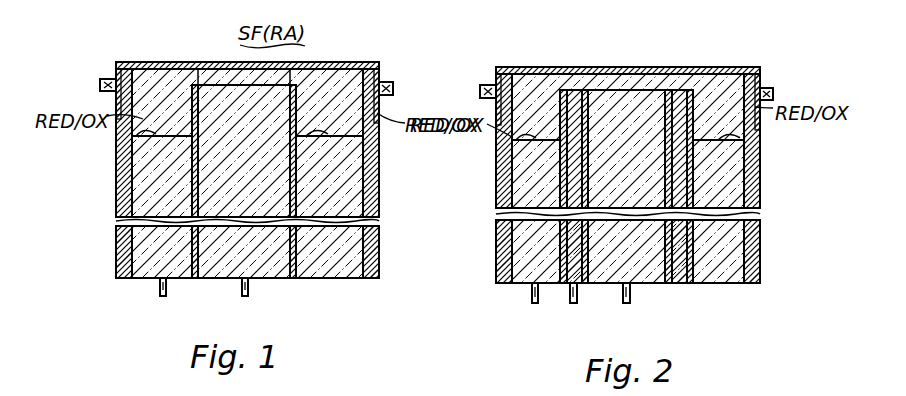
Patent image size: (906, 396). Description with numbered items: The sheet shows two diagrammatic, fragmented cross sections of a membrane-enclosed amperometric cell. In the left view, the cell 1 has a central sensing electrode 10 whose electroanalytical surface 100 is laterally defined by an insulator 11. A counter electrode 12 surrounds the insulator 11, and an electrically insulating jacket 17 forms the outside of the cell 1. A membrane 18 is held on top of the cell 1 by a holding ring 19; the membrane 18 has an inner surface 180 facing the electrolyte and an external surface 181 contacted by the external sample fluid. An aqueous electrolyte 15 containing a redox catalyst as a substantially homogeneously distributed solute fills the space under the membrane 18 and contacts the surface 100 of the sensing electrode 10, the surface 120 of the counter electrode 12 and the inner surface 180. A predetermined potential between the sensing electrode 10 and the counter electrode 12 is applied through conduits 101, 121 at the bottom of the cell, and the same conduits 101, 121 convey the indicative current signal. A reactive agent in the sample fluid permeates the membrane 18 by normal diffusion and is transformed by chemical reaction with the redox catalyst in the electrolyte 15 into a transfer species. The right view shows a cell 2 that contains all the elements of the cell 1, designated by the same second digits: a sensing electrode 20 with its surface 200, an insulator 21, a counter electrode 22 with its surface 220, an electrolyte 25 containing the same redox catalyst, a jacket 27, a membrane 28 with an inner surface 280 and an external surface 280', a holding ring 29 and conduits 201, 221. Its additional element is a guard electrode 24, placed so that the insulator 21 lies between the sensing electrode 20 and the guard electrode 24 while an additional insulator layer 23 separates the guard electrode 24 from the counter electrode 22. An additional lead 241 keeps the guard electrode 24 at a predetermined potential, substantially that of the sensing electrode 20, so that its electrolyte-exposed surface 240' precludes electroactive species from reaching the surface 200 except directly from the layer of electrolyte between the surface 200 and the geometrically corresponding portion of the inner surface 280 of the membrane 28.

In FIG. 1, the cell 1 is at (97, 173).
In FIG. 1, the sensing electrode 10 is at (248, 156).
In FIG. 1, the insulator 11 is at (335, 63).
In FIG. 1, the counter electrode 12 is at (168, 194).
In FIG. 1, the aqueous electrolyte 15 is at (165, 97).
In FIG. 1, the electrically insulating jacket 17 is at (118, 193).
In FIG. 1, the membrane 18 is at (340, 90).
In FIG. 1, the holding ring 19 is at (103, 80).
In FIG. 1, the electroanalytical surface 100 is at (217, 80).
In FIG. 1, the conduit 101 is at (242, 296).
In FIG. 1, the surface of counter electrode 120 is at (145, 133).
In FIG. 1, the conduit 121 is at (160, 293).
In FIG. 1, the inner surface of membrane 180 is at (150, 70).
In FIG. 1, the external surface of membrane 181 is at (125, 62).
In FIG. 2, the MEAC 2 is at (482, 277).
In FIG. 2, the sensing electrode 20 is at (635, 162).
In FIG. 2, the insulator 21 is at (668, 90).
In FIG. 2, the counter electrode 22 is at (544, 192).
In FIG. 2, the additional insulator layer 23 is at (737, 157).
In FIG. 2, the guard electrode 24 is at (500, 195).
In FIG. 2, the electrolyte 25 is at (544, 126).
In FIG. 2, the electrically insulating jacket 27 is at (505, 240).
In FIG. 2, the membrane 28 is at (727, 70).
In FIG. 2, the holding ring 29 is at (481, 88).
In FIG. 2, the surface of sensing electrode 200 is at (640, 67).
In FIG. 2, the conduit 201 is at (628, 303).
In FIG. 2, the surface of counter electrode 220 is at (503, 155).
In FIG. 2, the conduit 221 is at (535, 303).
In FIG. 2, the electrolyte-exposed surface of guard electrode 240' is at (597, 119).
In FIG. 2, the lead 241 is at (573, 305).
In FIG. 2, the inner surface of membrane 280 is at (628, 74).
In FIG. 2, the external surface of membrane 280' is at (520, 51).